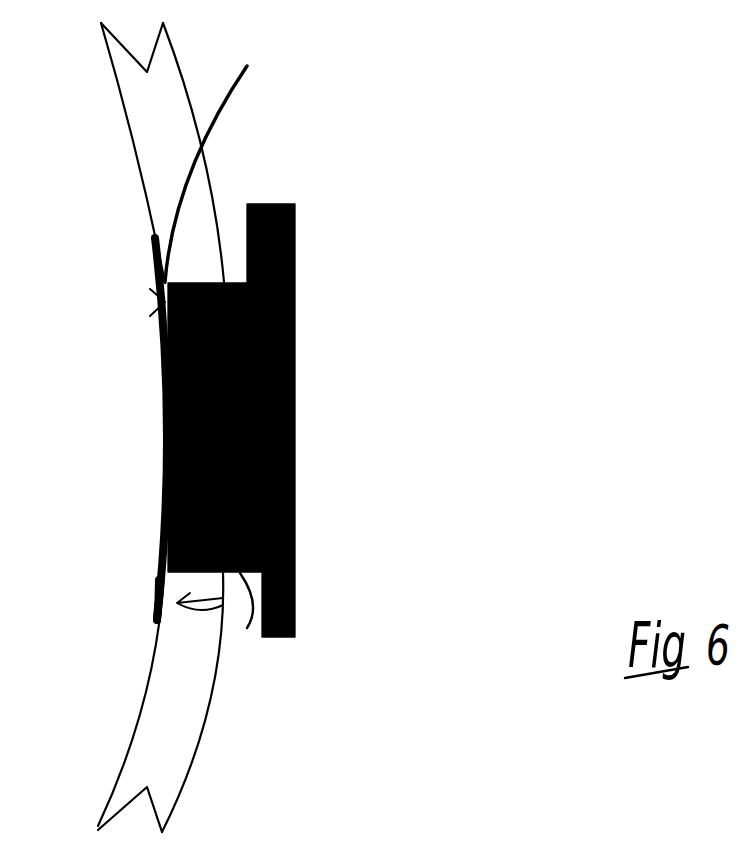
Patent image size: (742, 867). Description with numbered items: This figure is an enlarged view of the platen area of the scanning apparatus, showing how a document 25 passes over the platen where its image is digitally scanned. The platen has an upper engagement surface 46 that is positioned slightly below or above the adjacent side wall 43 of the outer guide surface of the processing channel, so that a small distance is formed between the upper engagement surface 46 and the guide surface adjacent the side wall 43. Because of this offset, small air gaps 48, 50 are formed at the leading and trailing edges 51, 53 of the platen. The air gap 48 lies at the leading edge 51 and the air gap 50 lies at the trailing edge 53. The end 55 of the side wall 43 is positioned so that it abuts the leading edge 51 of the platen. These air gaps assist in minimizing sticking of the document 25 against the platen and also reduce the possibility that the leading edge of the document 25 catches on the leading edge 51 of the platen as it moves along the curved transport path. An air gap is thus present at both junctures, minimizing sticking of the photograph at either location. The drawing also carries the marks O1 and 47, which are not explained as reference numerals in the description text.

The end of side wall 55 is at (237, 144).
The air gap 48 is at (180, 279).
The side wall 43 is at (168, 188).
The reference point O1 is at (140, 304).
The leading edge of platen 51 is at (167, 462).
The upper engagement surface 46 is at (167, 390).
The document 25 is at (152, 603).
The lower strip portion 47 is at (157, 645).
The trailing edge of platen 53 is at (241, 622).
The air gap 50 is at (168, 578).